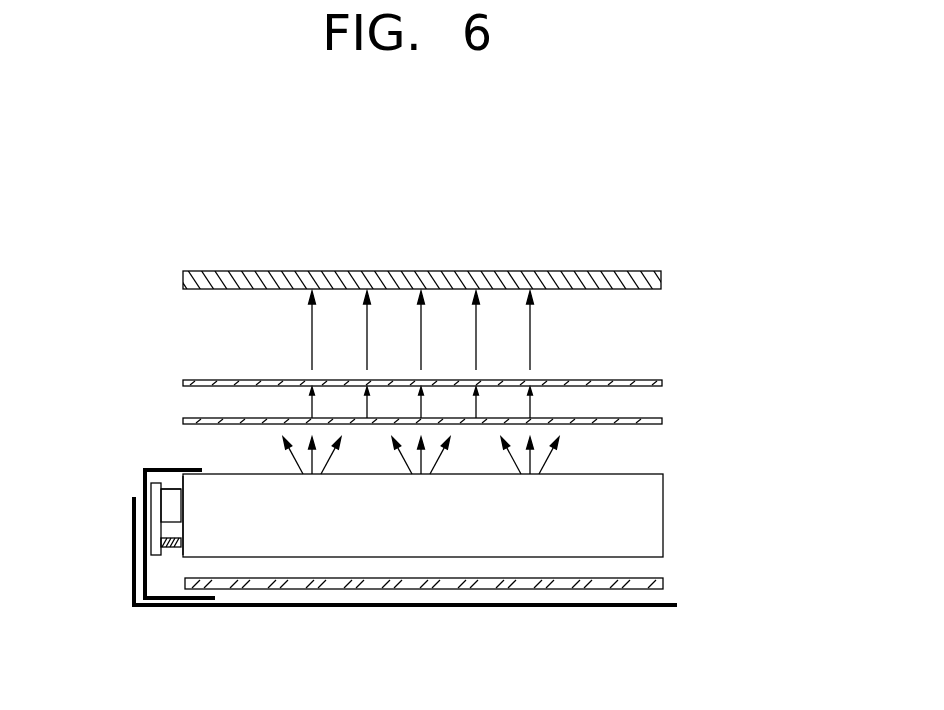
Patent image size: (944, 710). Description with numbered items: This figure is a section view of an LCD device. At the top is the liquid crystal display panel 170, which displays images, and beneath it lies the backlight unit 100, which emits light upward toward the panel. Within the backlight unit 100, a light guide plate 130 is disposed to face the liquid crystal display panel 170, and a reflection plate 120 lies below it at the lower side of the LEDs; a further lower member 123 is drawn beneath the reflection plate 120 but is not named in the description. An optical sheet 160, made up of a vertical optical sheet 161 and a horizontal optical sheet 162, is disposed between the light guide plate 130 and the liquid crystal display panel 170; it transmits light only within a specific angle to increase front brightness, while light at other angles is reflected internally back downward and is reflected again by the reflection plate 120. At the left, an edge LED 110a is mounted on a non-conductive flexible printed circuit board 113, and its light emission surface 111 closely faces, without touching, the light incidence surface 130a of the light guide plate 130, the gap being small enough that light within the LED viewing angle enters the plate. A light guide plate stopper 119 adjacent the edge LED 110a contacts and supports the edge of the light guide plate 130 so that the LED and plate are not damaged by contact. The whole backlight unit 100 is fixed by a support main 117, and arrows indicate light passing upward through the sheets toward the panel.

The backlight unit 100 is at (53, 460).
The LED disposed at edge portion 110a is at (168, 492).
The light emission surface 111 is at (183, 510).
The flexible printed circuit board 113 is at (150, 487).
The support main 117 is at (178, 598).
The light guide plate stopper 119 is at (163, 552).
The reflection plate 120 is at (663, 582).
The bottom cover 123 is at (559, 607).
The light guide plate 130 is at (653, 516).
The light incidence surface 130a is at (181, 488).
The optical sheet 160 is at (490, 397).
The vertical optical sheet 161 is at (460, 427).
The horizontal optical sheet 162 is at (662, 381).
The liquid crystal display panel 170 is at (661, 278).